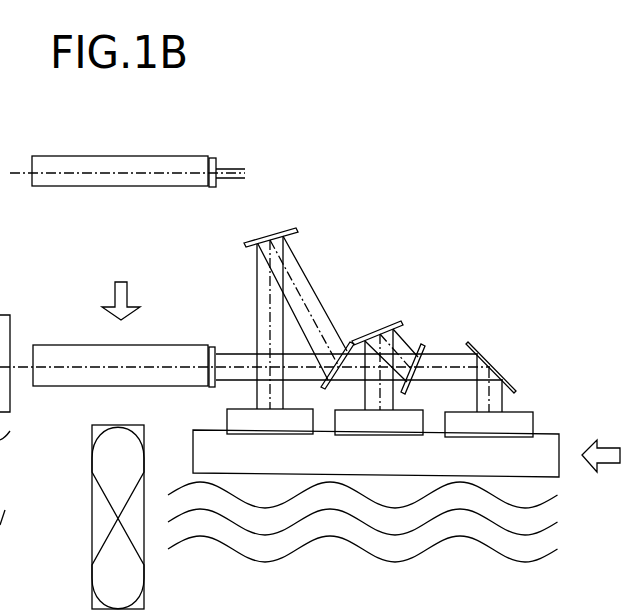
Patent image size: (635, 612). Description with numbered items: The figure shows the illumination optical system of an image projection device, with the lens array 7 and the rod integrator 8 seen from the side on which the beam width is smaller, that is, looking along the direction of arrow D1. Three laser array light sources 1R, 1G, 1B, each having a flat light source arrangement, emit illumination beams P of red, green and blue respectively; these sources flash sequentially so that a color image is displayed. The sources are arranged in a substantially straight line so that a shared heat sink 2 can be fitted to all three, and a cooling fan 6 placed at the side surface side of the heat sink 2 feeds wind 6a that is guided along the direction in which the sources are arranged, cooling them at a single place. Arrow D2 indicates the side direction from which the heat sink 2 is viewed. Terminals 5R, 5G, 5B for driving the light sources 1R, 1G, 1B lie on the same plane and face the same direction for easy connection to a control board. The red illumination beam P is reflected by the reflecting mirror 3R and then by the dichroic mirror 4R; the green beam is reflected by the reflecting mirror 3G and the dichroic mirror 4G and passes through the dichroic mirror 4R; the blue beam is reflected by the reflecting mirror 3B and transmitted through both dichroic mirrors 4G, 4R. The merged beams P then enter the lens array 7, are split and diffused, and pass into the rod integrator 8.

The rod integrator 8 is at (128, 187).
The lens array 7 is at (213, 188).
The illumination beam P is at (240, 179).
The arrow D1 is at (128, 288).
The arrow D2 is at (607, 440).
The reflecting mirror 3R is at (282, 231).
The dichroic mirror 4R is at (344, 354).
The reflecting mirror 3G is at (382, 331).
The dichroic mirror 4G is at (422, 349).
The reflecting mirror 3B is at (478, 352).
The terminal 5R is at (252, 434).
The terminal 5G is at (378, 435).
The terminal 5B is at (497, 437).
The heat sink 2 is at (193, 443).
The laser array light source 1R is at (302, 422).
The laser array light source 1G is at (412, 422).
The laser array light source 1B is at (520, 422).
The cooling fan 6 is at (145, 583).
The wind 6a is at (232, 549).